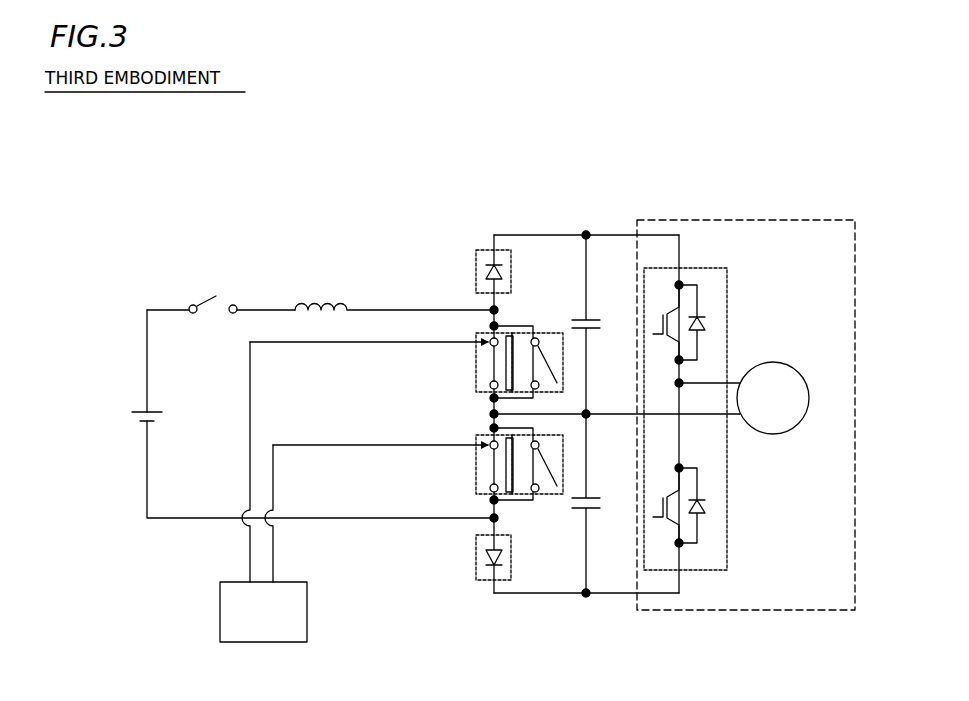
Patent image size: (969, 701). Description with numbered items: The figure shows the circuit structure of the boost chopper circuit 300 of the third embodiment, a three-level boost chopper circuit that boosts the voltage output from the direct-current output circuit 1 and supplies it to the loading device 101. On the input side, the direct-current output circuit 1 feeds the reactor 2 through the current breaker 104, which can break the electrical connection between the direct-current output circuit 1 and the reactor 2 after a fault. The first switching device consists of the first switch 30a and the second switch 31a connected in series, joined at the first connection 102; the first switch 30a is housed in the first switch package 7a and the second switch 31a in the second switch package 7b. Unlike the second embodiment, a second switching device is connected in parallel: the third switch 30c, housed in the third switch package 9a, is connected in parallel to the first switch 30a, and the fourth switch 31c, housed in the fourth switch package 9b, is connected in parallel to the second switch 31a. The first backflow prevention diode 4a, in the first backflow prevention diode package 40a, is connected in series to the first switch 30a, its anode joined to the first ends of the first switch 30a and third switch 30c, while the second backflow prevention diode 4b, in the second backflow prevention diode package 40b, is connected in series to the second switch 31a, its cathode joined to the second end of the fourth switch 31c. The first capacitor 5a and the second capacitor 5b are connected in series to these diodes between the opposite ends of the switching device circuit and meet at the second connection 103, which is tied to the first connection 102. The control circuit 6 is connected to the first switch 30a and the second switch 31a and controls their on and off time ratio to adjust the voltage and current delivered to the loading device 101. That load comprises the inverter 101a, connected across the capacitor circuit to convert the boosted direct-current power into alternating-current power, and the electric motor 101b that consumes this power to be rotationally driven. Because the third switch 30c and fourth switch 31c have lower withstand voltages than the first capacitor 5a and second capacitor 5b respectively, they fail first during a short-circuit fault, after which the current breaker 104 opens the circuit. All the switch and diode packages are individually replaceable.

The boost chopper circuit 300 is at (104, 190).
The direct-current output circuit 1 is at (135, 410).
The current breaker 104 is at (200, 303).
The reactor 2 is at (300, 304).
The control circuit 6 is at (220, 612).
The first backflow prevention diode package 40a is at (476, 251).
The first backflow prevention diode 4a is at (476, 272).
The second backflow prevention diode package 40b is at (476, 580).
The second backflow prevention diode 4b is at (476, 556).
The first switch 30a is at (492, 362).
The first switch package 7a is at (476, 395).
The third switch package 9a is at (565, 362).
The third switch 30c is at (547, 338).
The second switch 31a is at (492, 463).
The second switch package 7b is at (476, 496).
The fourth switch package 9b is at (565, 475).
The fourth switch 31c is at (556, 490).
The first connection 102 is at (490, 414).
The second connection 103 is at (590, 418).
The first capacitor 5a is at (594, 318).
The second capacitor 5b is at (594, 512).
The loading device 101 is at (722, 218).
The inverter 101a is at (727, 296).
The electric motor 101b is at (776, 356).